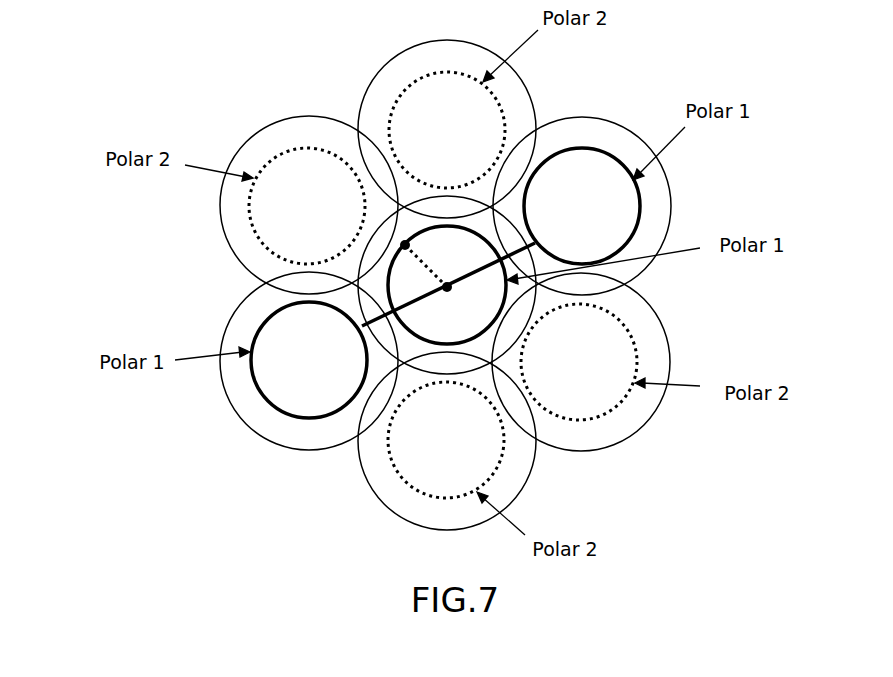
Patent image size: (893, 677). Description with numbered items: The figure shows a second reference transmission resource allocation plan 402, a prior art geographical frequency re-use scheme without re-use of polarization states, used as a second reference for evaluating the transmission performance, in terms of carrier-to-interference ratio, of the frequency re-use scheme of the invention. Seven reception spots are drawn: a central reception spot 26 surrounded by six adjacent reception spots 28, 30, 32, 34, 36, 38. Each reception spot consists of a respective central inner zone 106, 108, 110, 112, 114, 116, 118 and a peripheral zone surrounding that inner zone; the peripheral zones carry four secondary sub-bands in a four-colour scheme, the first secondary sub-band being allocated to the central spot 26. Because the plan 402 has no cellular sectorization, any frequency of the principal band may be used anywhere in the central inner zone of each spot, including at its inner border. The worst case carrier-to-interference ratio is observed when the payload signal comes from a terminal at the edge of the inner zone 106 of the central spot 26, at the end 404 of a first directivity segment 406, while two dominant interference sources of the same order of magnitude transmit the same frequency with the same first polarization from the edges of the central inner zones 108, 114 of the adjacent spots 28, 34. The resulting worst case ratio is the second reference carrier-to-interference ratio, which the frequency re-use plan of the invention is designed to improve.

The second reference transmission resource allocation plan 402 is at (127, 74).
The central reception spot 26 is at (420, 224).
The reception spot 28 is at (252, 405).
The reception spot 30 is at (240, 234).
The reception spot 32 is at (408, 65).
The reception spot 34 is at (610, 137).
The reception spot 36 is at (613, 428).
The reception spot 38 is at (388, 488).
The central inner zone 106 is at (448, 285).
The central inner zone 108 is at (309, 360).
The central inner zone 110 is at (307, 206).
The central inner zone 112 is at (447, 130).
The central inner zone 114 is at (582, 206).
The central inner zone 116 is at (579, 362).
The central inner zone 118 is at (446, 440).
The end of first directivity segment 404 is at (400, 243).
The first directivity segment 406 is at (422, 261).